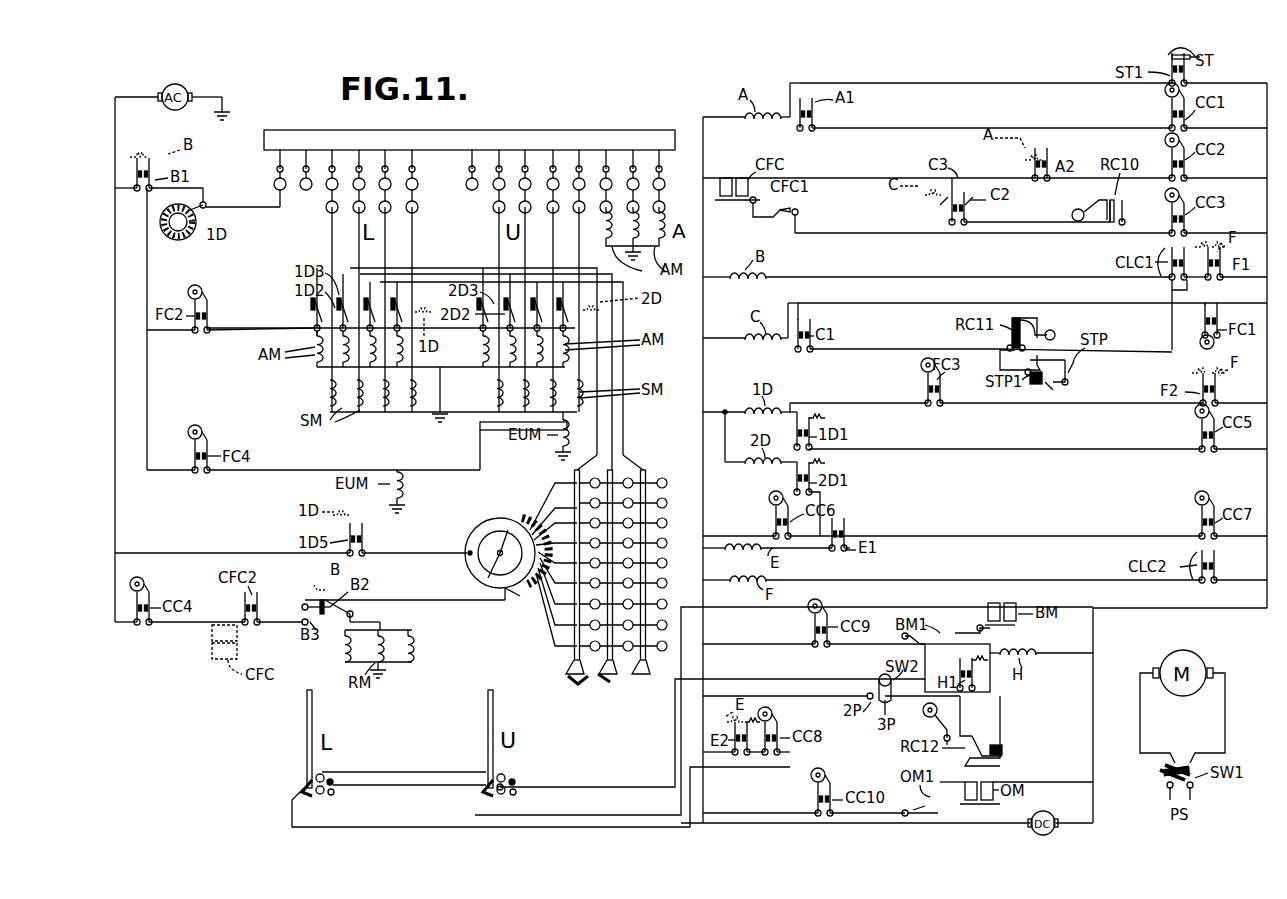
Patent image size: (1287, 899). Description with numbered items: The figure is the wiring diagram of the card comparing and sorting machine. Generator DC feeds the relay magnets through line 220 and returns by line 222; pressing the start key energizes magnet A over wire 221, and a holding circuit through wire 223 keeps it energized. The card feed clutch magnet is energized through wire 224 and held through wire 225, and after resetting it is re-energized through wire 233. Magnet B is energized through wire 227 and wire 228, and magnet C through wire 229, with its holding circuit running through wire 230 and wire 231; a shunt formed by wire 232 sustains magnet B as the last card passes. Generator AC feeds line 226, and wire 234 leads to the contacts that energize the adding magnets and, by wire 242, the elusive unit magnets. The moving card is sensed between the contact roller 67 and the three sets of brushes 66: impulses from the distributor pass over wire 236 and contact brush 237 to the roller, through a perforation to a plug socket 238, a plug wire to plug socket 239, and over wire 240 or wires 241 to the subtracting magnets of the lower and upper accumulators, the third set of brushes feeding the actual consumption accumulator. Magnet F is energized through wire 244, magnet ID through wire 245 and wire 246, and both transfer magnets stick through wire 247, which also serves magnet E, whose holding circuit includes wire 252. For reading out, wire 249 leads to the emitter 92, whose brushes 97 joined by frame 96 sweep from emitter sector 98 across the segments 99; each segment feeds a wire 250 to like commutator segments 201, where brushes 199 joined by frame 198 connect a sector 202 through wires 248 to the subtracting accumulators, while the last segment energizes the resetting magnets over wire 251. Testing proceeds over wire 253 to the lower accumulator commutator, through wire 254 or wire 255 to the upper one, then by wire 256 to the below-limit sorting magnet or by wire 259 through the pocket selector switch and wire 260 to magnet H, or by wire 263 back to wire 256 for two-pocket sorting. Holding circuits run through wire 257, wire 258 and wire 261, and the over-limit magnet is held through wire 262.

The contact roller 67 is at (425, 115).
The sensing brushes 66 is at (470, 158).
The contact brush 237 is at (276, 168).
The plug socket 238 is at (466, 184).
The plug socket 239 is at (493, 203).
The wire 240 is at (385, 215).
The wires 241 is at (525, 244).
The wire 236 is at (225, 207).
The line 226 is at (115, 130).
The wire 234 is at (147, 275).
The wire 242 is at (300, 470).
The wire 249 is at (214, 540).
The wire 250 is at (540, 527).
The emitter 92 is at (468, 545).
The frame 96 is at (498, 540).
The emitter brush 97 is at (498, 536).
The emitter sector 98 is at (468, 566).
The emitter segment 99 is at (518, 598).
The commutator segments 201 is at (667, 533).
The contact sector 202 is at (575, 652).
The frame 198 is at (575, 680).
The commutator brushes 199 is at (600, 676).
The wire 251 is at (470, 588).
The wires 248 is at (597, 365).
The line 220 is at (703, 462).
The wire 221 is at (920, 83).
The line 222 is at (1267, 100).
The wire 223 is at (870, 128).
The wire 224 is at (870, 163).
The wire 225 is at (875, 218).
The wire 227 is at (855, 277).
The wire 228 is at (1250, 277).
The wire 229 is at (895, 303).
The wire 230 is at (860, 349).
The wire 231 is at (1130, 352).
The wire 232 is at (1172, 288).
The wire 233 is at (1012, 212).
The wire 244 is at (975, 580).
The wire 245 is at (880, 388).
The wire 246 is at (1080, 403).
The wire 247 is at (1050, 449).
The wire 252 is at (985, 536).
The wire 253 is at (360, 827).
The wire 254 is at (373, 773).
The wire 255 is at (440, 760).
The wire 256 is at (635, 803).
The wire 257 is at (760, 634).
The wire 258 is at (892, 634).
The wire 259 is at (645, 775).
The wire 260 is at (973, 722).
The wire 261 is at (957, 668).
The wire 262 is at (763, 798).
The wire 263 is at (785, 696).